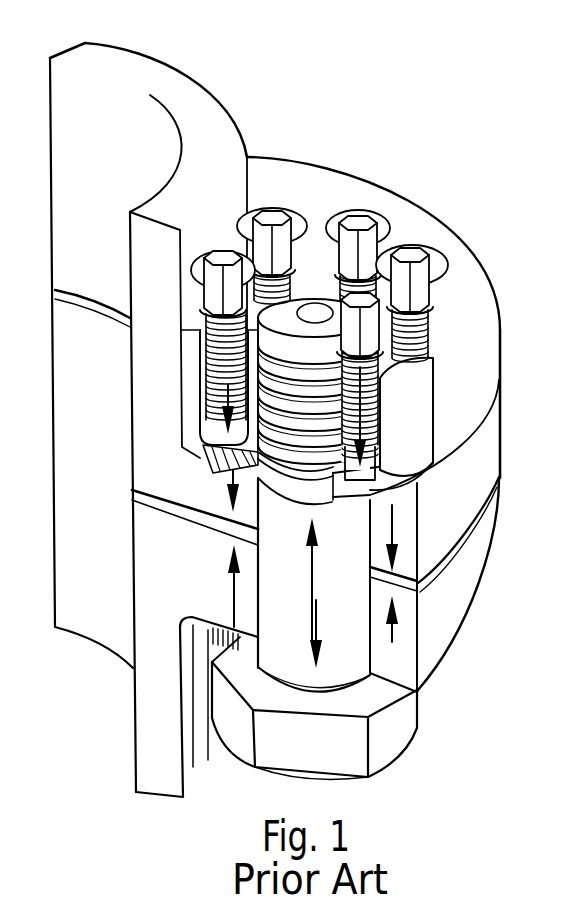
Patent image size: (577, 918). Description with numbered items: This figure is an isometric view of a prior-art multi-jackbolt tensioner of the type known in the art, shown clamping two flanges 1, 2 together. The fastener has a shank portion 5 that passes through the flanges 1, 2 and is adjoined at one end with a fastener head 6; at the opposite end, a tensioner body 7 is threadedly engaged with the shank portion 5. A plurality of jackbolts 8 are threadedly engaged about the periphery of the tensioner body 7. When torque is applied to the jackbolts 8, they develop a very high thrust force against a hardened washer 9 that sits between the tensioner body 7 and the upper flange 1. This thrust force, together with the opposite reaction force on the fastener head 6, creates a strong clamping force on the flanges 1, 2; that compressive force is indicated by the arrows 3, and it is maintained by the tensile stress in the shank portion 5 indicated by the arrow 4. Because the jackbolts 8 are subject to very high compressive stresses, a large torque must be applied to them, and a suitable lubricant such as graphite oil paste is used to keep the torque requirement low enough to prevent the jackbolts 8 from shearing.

The flange 1 is at (487, 430).
The flange 2 is at (472, 550).
The compressor force arrows 3 is at (228, 497).
The stress arrow 4 is at (312, 614).
The shank portion 5 is at (350, 668).
The fastener head 6 is at (385, 738).
The tensioner body 7 is at (418, 390).
The jackbolts 8 is at (362, 222).
The hardened washer 9 is at (200, 440).